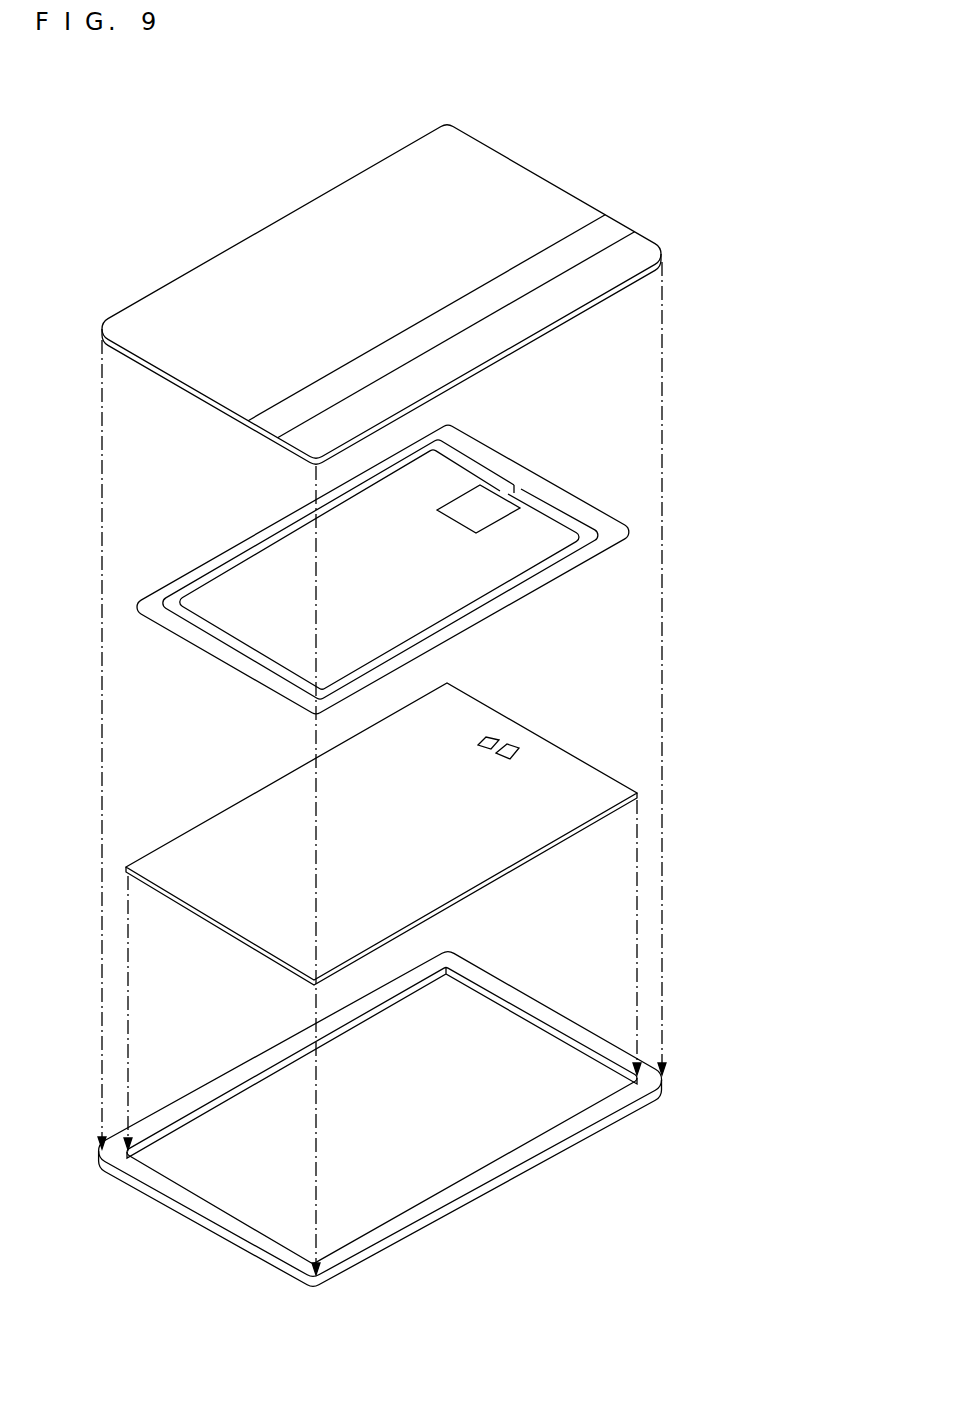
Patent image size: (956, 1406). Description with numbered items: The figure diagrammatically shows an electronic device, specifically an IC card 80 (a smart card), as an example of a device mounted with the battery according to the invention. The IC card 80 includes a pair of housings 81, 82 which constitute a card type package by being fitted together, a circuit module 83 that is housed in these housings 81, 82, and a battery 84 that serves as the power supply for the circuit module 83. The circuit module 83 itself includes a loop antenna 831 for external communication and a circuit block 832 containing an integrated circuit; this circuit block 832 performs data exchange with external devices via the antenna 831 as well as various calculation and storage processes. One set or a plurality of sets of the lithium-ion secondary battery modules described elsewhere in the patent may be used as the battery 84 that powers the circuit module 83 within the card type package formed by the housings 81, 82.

The IC card 80 is at (379, 705).
The housing 81 is at (198, 287).
The housing 82 is at (197, 1229).
The circuit module 83 is at (383, 551).
The loop antenna 831 is at (252, 550).
The circuit block 832 is at (488, 518).
The battery 84 is at (540, 737).